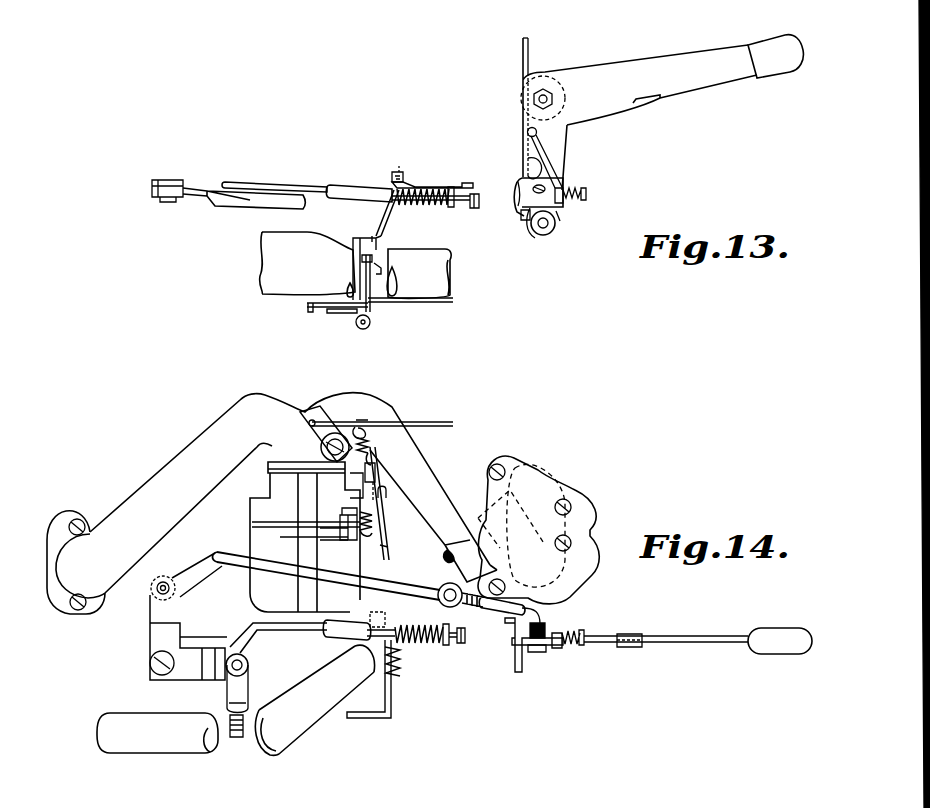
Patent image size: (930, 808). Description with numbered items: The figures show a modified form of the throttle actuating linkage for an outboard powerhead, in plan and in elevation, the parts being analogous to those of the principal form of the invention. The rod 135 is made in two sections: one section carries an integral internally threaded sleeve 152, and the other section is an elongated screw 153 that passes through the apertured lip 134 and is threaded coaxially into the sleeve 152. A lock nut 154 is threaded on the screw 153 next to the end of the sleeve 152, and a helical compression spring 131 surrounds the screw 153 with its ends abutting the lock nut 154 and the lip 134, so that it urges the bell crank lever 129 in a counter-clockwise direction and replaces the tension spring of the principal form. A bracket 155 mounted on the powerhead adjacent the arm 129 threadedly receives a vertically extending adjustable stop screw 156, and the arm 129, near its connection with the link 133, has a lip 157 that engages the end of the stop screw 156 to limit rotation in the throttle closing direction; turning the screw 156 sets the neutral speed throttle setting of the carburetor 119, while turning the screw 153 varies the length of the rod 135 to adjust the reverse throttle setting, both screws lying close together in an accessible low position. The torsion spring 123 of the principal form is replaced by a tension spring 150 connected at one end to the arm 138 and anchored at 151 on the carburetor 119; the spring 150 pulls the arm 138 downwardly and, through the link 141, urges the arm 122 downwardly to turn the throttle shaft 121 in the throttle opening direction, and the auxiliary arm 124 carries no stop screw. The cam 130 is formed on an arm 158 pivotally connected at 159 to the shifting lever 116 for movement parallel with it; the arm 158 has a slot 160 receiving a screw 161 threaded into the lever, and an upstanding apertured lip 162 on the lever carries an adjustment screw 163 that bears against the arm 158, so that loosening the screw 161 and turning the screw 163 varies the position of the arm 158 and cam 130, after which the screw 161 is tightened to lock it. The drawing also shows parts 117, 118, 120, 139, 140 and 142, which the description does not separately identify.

In FIG. 13, the shifting lever 116 is at (608, 100).
In FIG. 14, the shifting lever 116 is at (660, 642).
In FIG. 13, the handle grip 117 is at (785, 70).
In FIG. 14, the handle grip 117 is at (783, 645).
In FIG. 13, the throttle lever 118 is at (270, 200).
In FIG. 14, the throttle lever 118 is at (352, 575).
In FIG. 14, the carburetor 119 is at (260, 507).
In FIG. 13, the intake manifold branch 120 is at (268, 258).
In FIG. 14, the intake manifold branch 120 is at (258, 408).
In FIG. 13, the throttle shaft 121 is at (396, 280).
In FIG. 13, the arm 122 is at (378, 310).
In FIG. 14, the arm 122 is at (378, 470).
In FIG. 13, the torsion spring 123 is at (376, 254).
In FIG. 13, the auxiliary arm 124 is at (350, 248).
In FIG. 14, the auxiliary arm 124 is at (386, 496).
In FIG. 13, the bell crank lever 129 is at (438, 187).
In FIG. 14, the bell crank lever 129 is at (428, 598).
In FIG. 13, the cam 130 is at (514, 204).
In FIG. 14, the cam 130 is at (512, 627).
In FIG. 13, the helical compression spring 131 is at (425, 212).
In FIG. 14, the helical compression spring 131 is at (425, 648).
In FIG. 13, the link 133 is at (390, 216).
In FIG. 14, the link 133 is at (390, 548).
In FIG. 13, the apertured lip 134 is at (455, 208).
In FIG. 14, the apertured lip 134 is at (446, 648).
In FIG. 13, the rod 135 is at (326, 190).
In FIG. 14, the rod 135 is at (312, 638).
In FIG. 13, the arm 138 is at (345, 316).
In FIG. 14, the arm 138 is at (348, 440).
In FIG. 13, the support plate 139 is at (305, 312).
In FIG. 14, the support plate 139 is at (305, 427).
In FIG. 14, the spring hook 140 is at (366, 440).
In FIG. 13, the link 141 is at (346, 292).
In FIG. 14, the link 141 is at (372, 455).
In FIG. 13, the guide plate 142 is at (440, 304).
In FIG. 14, the guide plate 142 is at (420, 420).
In FIG. 13, the tension spring 150 is at (369, 325).
In FIG. 14, the tension spring 150 is at (368, 452).
In FIG. 14, the anchor 151 is at (344, 524).
In FIG. 13, the internally threaded sleeve 152 is at (355, 190).
In FIG. 14, the internally threaded sleeve 152 is at (345, 624).
In FIG. 13, the elongated screw 153 is at (480, 206).
In FIG. 14, the elongated screw 153 is at (462, 645).
In FIG. 14, the lock nut 154 is at (390, 640).
In FIG. 14, the bracket 155 is at (390, 710).
In FIG. 13, the adjustable stop screw 156 is at (399, 165).
In FIG. 14, the adjustable stop screw 156 is at (385, 672).
In FIG. 13, the lip 157 is at (404, 182).
In FIG. 14, the lip 157 is at (375, 615).
In FIG. 13, the arm 158 is at (548, 175).
In FIG. 14, the arm 158 is at (543, 625).
In FIG. 13, the pivotal connection 159 is at (537, 132).
In FIG. 13, the slot 160 is at (546, 188).
In FIG. 13, the screw 161 is at (536, 162).
In FIG. 13, the upstanding apertured lip 162 is at (560, 200).
In FIG. 14, the upstanding apertured lip 162 is at (560, 632).
In FIG. 13, the adjustment screw 163 is at (586, 188).
In FIG. 14, the adjustment screw 163 is at (582, 636).